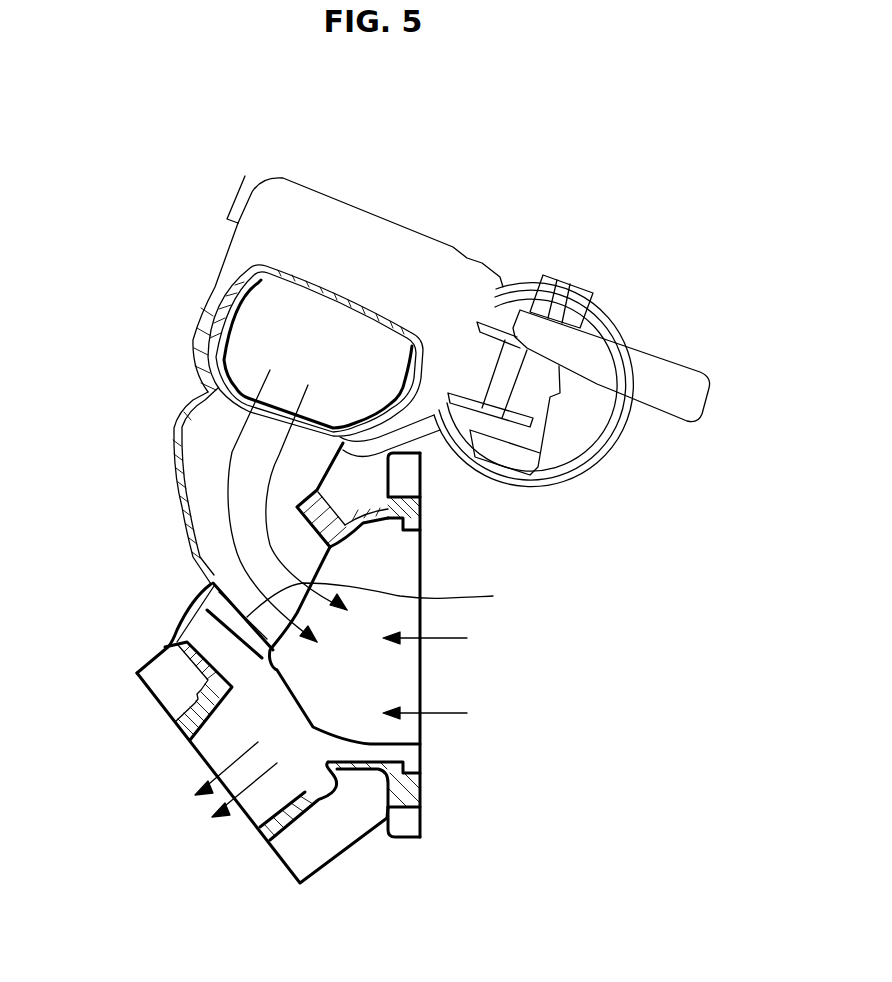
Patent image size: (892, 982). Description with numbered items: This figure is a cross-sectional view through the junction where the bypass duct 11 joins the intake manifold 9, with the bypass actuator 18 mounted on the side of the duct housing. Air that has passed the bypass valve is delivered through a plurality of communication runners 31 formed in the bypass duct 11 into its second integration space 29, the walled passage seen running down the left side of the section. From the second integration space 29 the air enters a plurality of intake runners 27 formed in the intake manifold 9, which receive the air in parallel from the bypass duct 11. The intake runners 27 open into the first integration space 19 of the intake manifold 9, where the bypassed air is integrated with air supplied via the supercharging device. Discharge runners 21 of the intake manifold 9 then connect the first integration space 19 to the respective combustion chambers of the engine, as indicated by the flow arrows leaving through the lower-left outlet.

The intake manifold 9 is at (410, 823).
The bypass duct 11 is at (216, 288).
The bypass actuator 18 is at (580, 295).
The first integration space 19 is at (365, 665).
The discharge runner 21 is at (232, 738).
The intake runner 27 is at (393, 598).
The second integration space 29 is at (212, 442).
The communication runner 31 is at (310, 453).